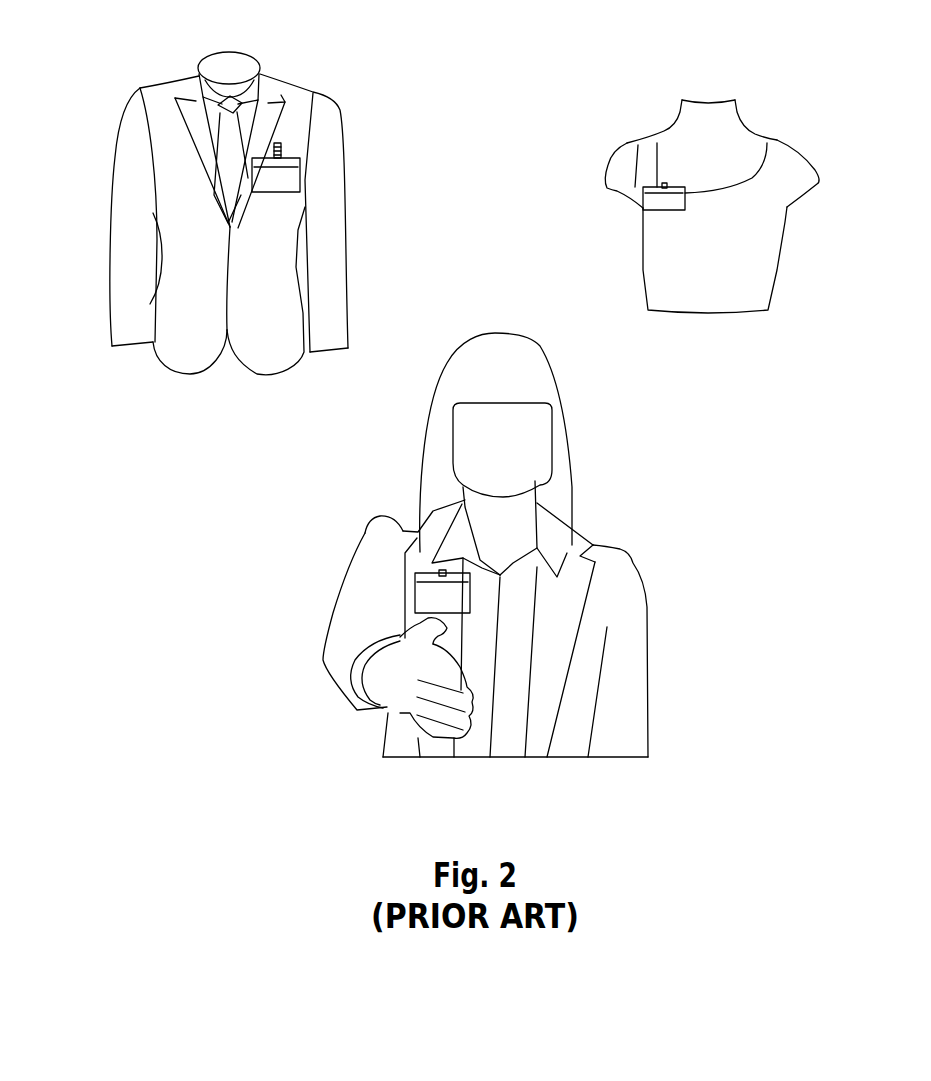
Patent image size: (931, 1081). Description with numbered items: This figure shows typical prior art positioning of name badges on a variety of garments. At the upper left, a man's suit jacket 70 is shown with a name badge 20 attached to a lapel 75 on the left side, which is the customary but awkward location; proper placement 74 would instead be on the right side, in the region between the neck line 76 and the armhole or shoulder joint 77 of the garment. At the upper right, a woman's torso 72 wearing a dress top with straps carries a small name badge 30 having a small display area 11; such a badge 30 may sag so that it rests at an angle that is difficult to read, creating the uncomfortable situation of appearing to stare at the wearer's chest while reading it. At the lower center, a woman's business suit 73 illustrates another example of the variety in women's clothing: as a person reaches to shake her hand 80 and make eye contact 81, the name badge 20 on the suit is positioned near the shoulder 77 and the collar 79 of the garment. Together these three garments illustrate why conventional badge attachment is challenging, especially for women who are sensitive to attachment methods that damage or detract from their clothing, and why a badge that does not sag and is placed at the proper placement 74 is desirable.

The suit jacket 70 is at (345, 90).
The torso 72 is at (633, 115).
The business suit 73 is at (683, 632).
The proper placement 74 is at (175, 118).
The lapel 75 is at (196, 128).
The neck line 76 is at (190, 81).
The armhole/shoulder joint 77 is at (140, 88).
The collar 79 is at (425, 512).
The hand 80 is at (388, 677).
The eye contact 81 is at (537, 435).
The name badge 20 is at (298, 172).
The display area 11 is at (277, 173).
The name badge 30 is at (643, 197).